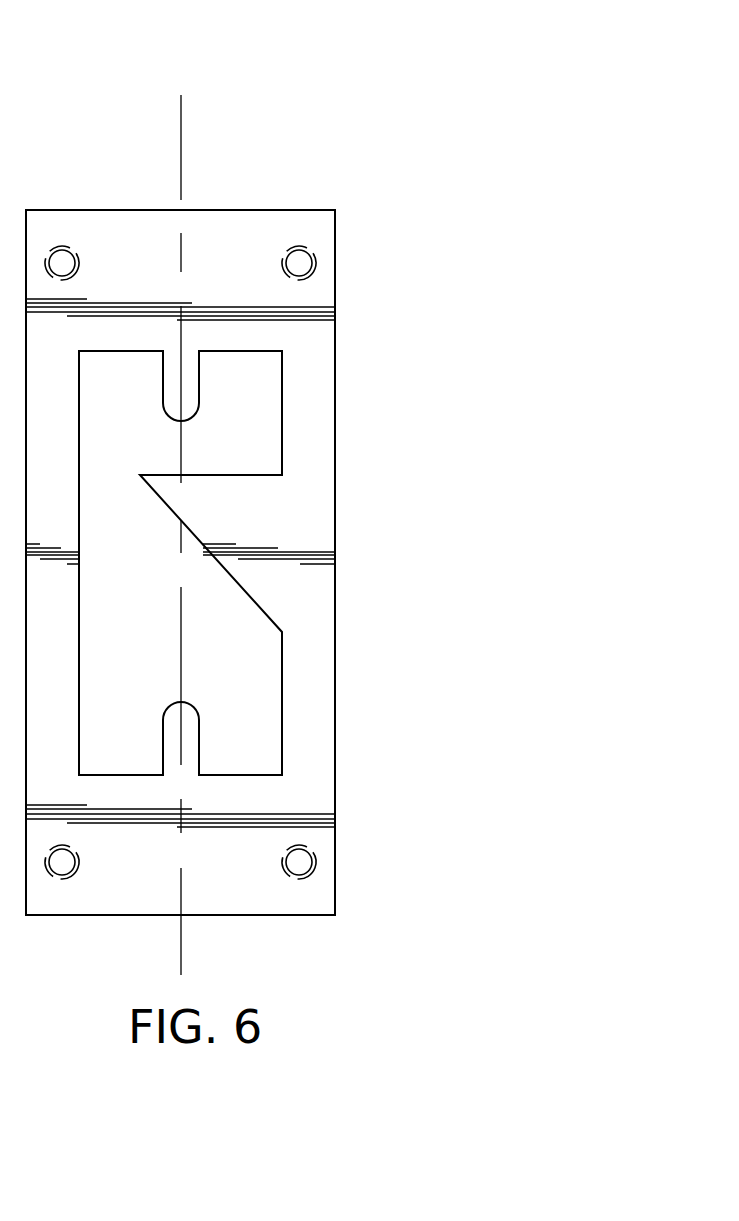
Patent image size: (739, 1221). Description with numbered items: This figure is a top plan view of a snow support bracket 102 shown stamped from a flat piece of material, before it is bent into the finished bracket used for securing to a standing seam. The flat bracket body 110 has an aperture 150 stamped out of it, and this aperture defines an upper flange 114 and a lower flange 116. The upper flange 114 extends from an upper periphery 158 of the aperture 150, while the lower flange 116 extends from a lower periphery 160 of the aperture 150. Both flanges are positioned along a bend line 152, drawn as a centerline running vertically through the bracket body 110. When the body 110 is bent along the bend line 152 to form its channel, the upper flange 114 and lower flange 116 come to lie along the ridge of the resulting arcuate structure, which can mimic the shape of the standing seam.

The snow support bracket 102 is at (312, 158).
The bracket body 110 is at (327, 294).
The upper flange 114 is at (186, 400).
The lower flange 116 is at (163, 718).
The aperture 150 is at (243, 457).
The bend line 152 is at (181, 143).
The upper periphery 158 is at (121, 351).
The lower periphery 160 is at (248, 775).